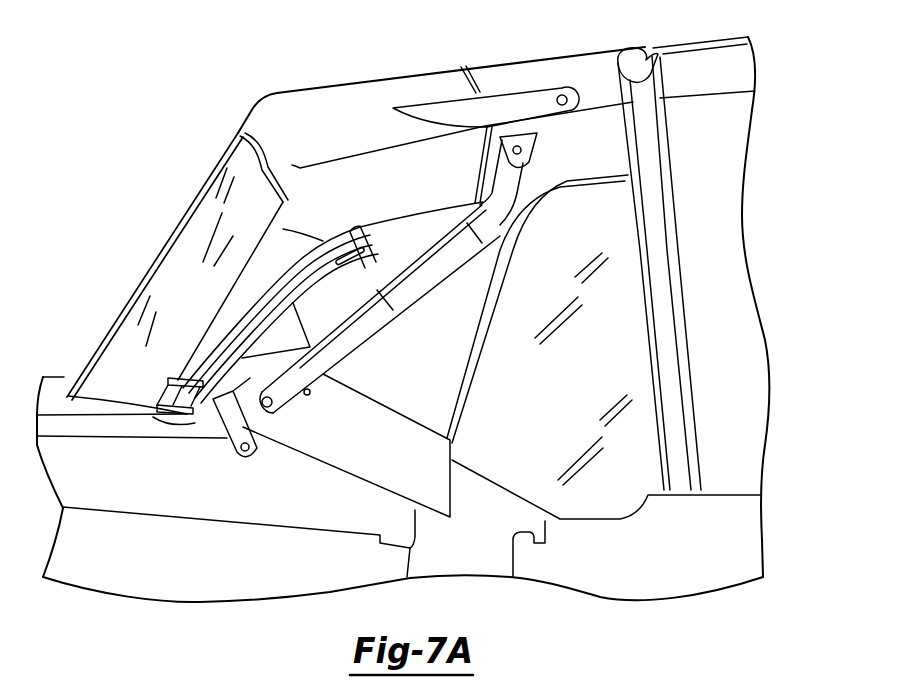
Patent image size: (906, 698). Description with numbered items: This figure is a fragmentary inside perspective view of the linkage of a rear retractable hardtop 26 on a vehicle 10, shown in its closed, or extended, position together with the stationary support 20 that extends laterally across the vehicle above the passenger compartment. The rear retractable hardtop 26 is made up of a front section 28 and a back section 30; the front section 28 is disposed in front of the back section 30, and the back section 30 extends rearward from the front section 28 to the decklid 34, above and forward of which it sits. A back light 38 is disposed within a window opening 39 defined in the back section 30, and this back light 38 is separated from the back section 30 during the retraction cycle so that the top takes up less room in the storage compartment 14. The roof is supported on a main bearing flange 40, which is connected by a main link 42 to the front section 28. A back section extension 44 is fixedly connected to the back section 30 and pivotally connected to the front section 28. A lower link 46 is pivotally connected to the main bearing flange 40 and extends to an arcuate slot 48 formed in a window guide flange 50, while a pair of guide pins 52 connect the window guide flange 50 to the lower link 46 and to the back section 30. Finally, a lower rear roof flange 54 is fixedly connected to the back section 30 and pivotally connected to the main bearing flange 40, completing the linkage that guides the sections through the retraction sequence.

The vehicle 10 is at (740, 535).
The storage compartment 14 is at (246, 499).
The stationary support 20 is at (750, 387).
The rear retractable hardtop 26 is at (242, 98).
The front section 28 is at (585, 66).
The back section 30 is at (388, 92).
The decklid 34 is at (63, 377).
The back light 38 is at (203, 237).
The window opening 39 is at (253, 163).
The main bearing flange 40 is at (372, 462).
The main link 42 is at (363, 323).
The back section extension 44 is at (430, 113).
The lower link 46 is at (228, 428).
The arcuate slot 48 is at (340, 260).
The window guide flange 50 is at (333, 275).
The guide pins 52 is at (152, 400).
The lower rear roof flange 54 is at (280, 353).